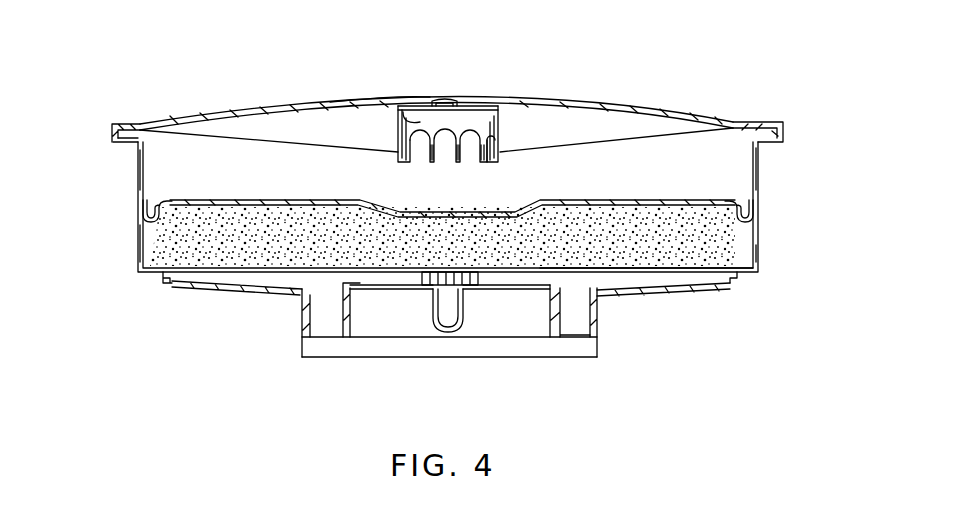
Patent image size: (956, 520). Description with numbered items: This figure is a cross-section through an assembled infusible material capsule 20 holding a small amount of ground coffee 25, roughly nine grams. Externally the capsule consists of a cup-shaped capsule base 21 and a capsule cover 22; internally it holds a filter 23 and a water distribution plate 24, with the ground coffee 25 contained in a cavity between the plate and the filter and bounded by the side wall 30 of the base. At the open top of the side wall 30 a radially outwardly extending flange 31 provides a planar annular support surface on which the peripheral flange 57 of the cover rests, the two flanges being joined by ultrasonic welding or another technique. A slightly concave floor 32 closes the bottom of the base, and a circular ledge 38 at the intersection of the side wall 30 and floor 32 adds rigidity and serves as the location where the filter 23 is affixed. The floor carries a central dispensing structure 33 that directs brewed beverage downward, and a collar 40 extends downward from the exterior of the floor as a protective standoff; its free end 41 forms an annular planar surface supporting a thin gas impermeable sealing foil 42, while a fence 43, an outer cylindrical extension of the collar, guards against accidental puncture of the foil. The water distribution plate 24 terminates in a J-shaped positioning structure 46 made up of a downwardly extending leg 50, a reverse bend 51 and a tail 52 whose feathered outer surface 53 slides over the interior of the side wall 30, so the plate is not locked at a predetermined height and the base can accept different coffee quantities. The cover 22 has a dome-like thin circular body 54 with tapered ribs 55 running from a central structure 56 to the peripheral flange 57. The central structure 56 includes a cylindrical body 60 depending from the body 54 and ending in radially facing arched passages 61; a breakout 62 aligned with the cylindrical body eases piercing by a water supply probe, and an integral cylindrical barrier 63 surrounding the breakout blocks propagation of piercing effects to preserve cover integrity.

The infusible material capsule 20 is at (760, 96).
The capsule base 21 is at (776, 243).
The capsule cover 22 is at (600, 95).
The filter 23 is at (630, 247).
The water distribution plate 24 is at (302, 192).
The ground coffee 25 is at (442, 236).
The side wall 30 is at (138, 196).
The flange 31 is at (125, 143).
The floor 32 is at (243, 288).
The central dispensing structure 33 is at (395, 372).
The circular ledge 38 is at (150, 278).
The collar 40 is at (575, 318).
The free end 41 is at (557, 340).
The sealing foil 42 is at (522, 340).
The fence 43 is at (300, 343).
The positioning structure 46 is at (157, 188).
The downwardly extending leg 50 is at (736, 208).
The reverse bend 51 is at (757, 262).
The tail 52 is at (762, 152).
The feathered outer surface 53 is at (760, 196).
The dome-like thin circular body 54 is at (343, 100).
The ribs 55 is at (298, 120).
The central structure 56 is at (443, 117).
The peripheral flange 57 is at (127, 121).
The cylindrical body 60 is at (497, 140).
The arched passages 61 is at (484, 150).
The breakout 62 is at (481, 112).
The cylindrical barrier 63 is at (401, 110).